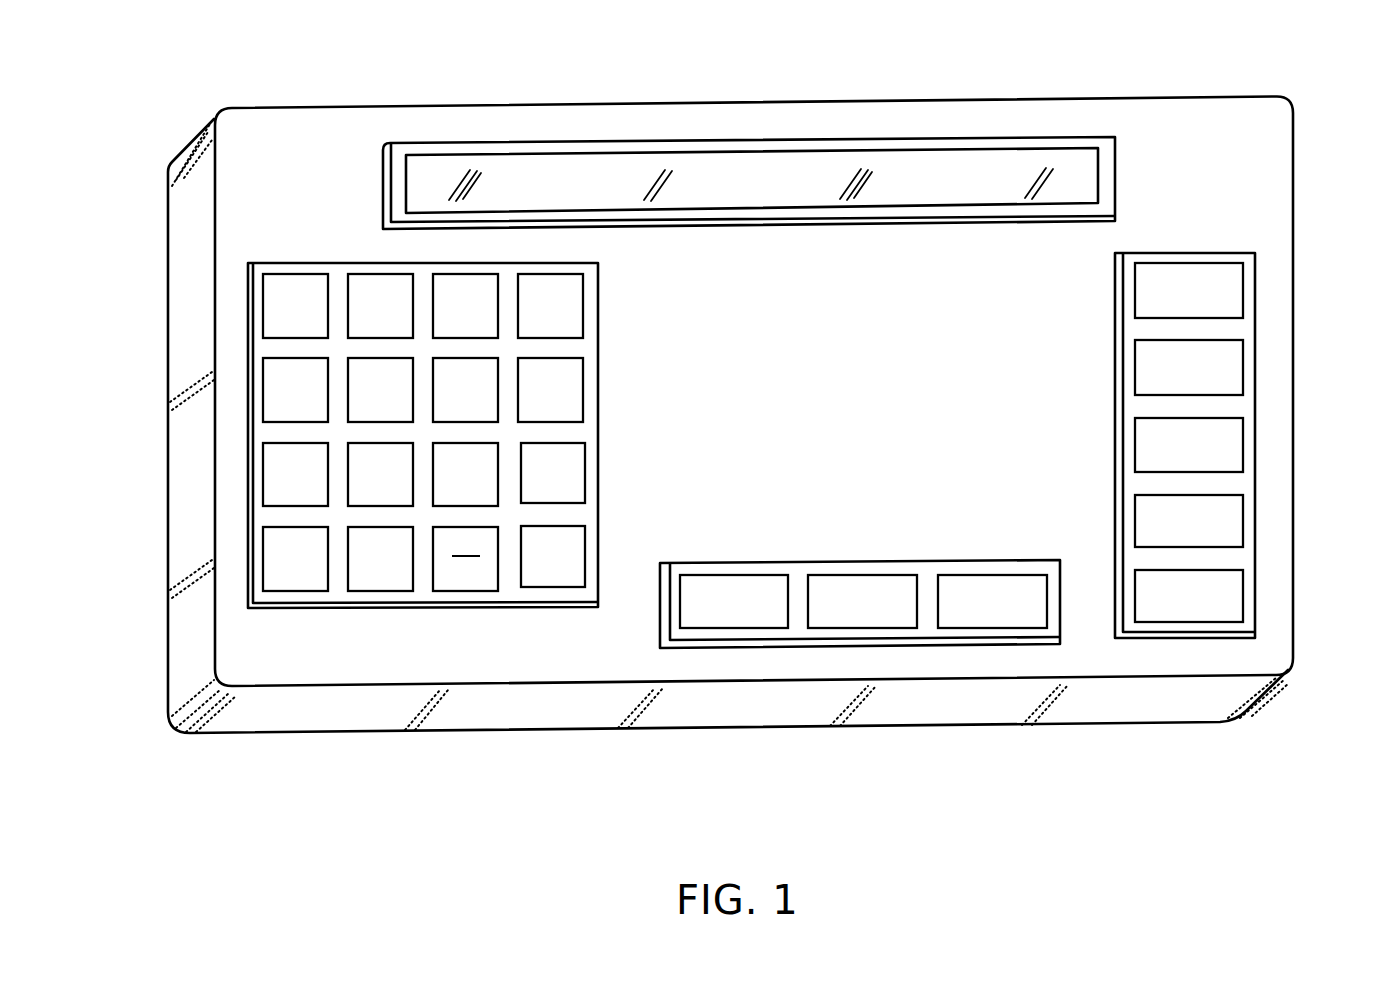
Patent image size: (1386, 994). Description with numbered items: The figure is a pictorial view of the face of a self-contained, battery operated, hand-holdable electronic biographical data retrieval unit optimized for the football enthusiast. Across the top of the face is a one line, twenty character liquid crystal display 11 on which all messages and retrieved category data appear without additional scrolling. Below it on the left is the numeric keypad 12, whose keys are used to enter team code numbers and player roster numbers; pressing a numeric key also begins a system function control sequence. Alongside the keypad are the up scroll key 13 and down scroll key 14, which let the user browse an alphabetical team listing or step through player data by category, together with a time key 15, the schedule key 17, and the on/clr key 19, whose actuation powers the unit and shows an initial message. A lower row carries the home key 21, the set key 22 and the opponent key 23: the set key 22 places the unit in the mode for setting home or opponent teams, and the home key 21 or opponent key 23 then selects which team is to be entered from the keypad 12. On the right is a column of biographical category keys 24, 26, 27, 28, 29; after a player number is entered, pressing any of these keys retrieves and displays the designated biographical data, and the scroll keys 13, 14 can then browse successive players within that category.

The liquid crystal display 11 is at (428, 182).
The numeric keypad 12 is at (374, 464).
The up scroll key 13 is at (575, 282).
The down scroll key 14 is at (575, 367).
The TIME key 15 is at (578, 451).
The schedule key 17 is at (576, 533).
The on/clr key 19 is at (477, 600).
The home key 21 is at (773, 580).
The set key 22 is at (900, 578).
The opponent key 23 is at (1030, 578).
The biographical category key 24 is at (1233, 273).
The biographical category key 26 is at (1227, 347).
The biographical category key 27 is at (1230, 433).
The biographical category key 28 is at (1227, 512).
The biographical category key 29 is at (1235, 580).